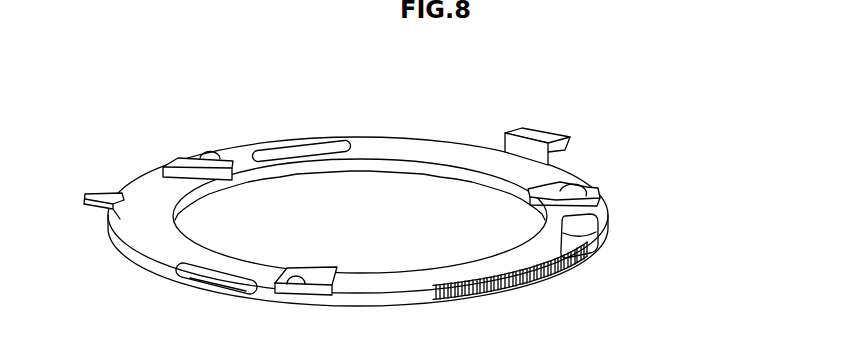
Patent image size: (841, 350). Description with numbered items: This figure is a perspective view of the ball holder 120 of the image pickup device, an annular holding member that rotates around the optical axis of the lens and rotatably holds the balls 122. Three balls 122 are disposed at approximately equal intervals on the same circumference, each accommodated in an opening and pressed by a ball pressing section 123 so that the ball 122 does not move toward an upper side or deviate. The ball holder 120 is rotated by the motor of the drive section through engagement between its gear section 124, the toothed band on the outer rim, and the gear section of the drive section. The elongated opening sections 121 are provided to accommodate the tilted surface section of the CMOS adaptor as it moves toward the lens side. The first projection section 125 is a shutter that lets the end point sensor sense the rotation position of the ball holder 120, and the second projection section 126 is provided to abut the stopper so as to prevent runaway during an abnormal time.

The ball holder 120 is at (414, 104).
The opening section 121 is at (297, 151).
The ball 122 is at (210, 155).
The ball pressing section 123 is at (187, 162).
The gear section 124 is at (492, 291).
The first projection section 125 is at (548, 133).
The second projection section 126 is at (105, 194).